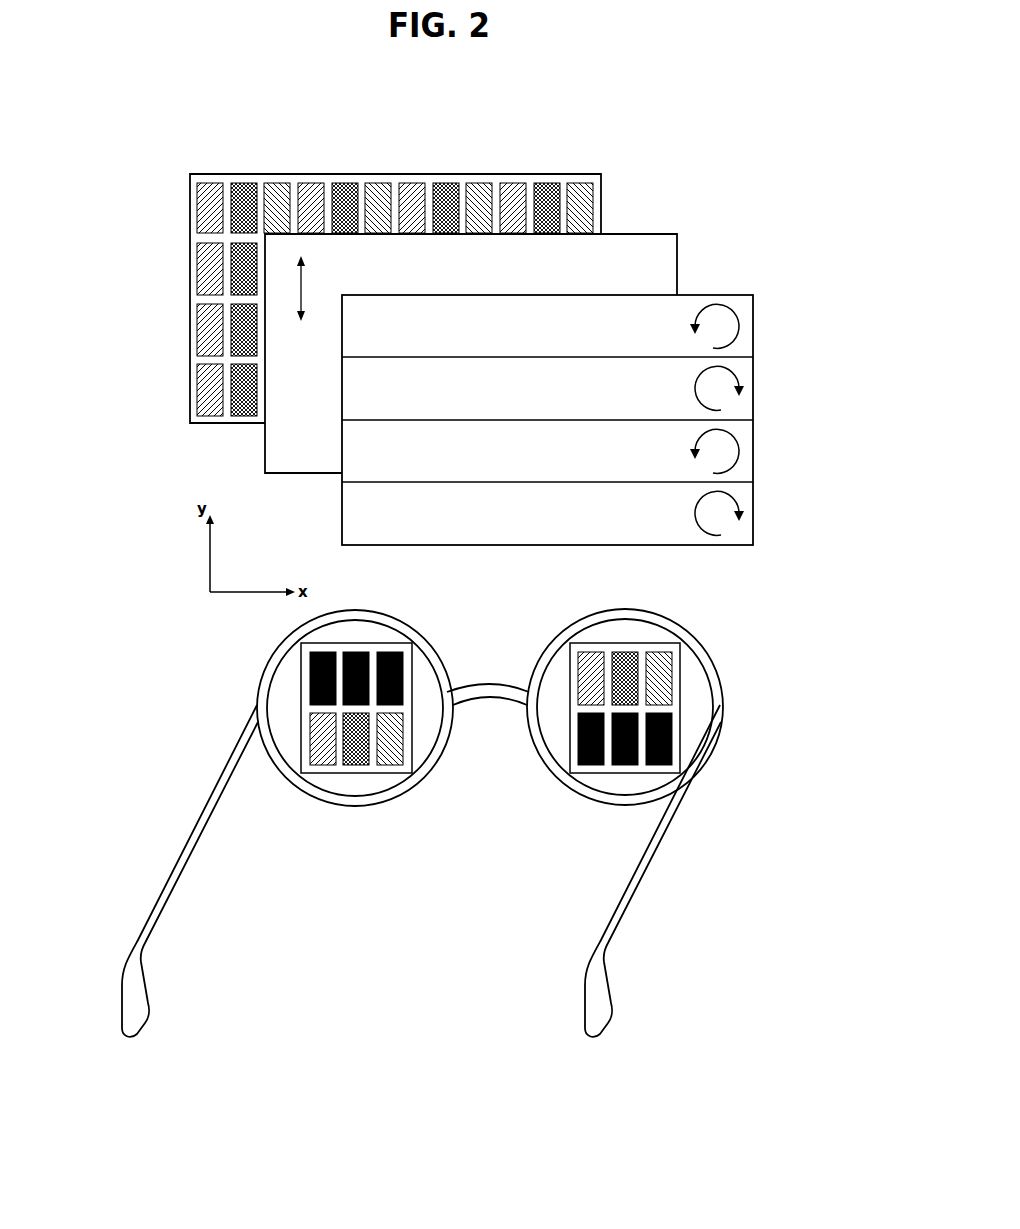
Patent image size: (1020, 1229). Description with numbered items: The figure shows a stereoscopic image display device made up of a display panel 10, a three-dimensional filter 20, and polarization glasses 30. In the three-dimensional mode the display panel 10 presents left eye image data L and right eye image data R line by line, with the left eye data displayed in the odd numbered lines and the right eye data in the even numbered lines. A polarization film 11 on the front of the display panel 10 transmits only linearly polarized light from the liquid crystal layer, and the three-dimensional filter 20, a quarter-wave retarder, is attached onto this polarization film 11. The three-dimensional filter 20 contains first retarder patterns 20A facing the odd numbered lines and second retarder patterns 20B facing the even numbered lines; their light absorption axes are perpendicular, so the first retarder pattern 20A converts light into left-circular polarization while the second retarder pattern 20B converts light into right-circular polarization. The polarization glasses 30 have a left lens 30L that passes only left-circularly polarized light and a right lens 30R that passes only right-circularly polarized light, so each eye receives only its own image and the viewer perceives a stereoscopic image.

The display panel 10 is at (567, 173).
The polarization film 11 is at (644, 234).
The 3D filter 20 is at (731, 265).
The first retarder pattern 20A is at (420, 339).
The second retarder pattern 20B is at (420, 402).
The polarization glasses 30 is at (687, 605).
The left lens 30L is at (449, 662).
The right lens 30R is at (716, 663).